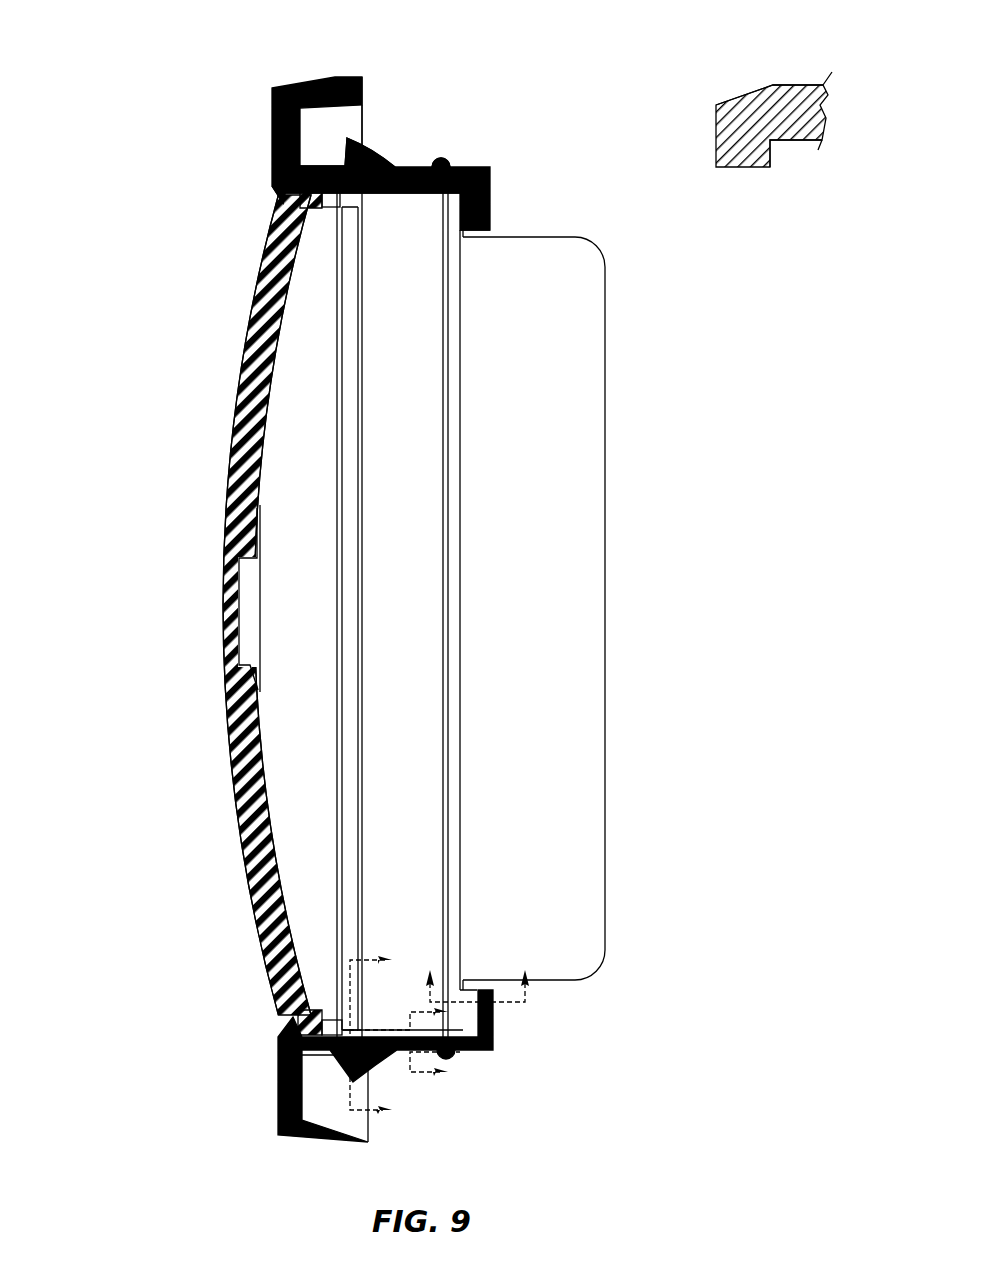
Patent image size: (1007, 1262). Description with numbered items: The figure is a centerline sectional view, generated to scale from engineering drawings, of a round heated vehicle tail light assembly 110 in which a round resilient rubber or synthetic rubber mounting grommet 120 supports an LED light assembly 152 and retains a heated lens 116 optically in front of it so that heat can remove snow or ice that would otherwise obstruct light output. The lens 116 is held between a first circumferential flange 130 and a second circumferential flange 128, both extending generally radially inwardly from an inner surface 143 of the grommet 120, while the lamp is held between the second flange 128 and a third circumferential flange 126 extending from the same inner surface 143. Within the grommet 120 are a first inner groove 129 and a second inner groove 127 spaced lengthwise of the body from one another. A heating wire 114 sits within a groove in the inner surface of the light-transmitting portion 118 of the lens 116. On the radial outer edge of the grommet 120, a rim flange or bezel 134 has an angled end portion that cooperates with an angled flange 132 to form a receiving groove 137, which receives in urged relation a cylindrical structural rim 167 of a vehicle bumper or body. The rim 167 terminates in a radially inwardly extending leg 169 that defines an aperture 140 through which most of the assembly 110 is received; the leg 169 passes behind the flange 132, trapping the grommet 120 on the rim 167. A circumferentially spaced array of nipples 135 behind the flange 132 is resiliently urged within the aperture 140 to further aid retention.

The round heated vehicle tail light assembly 110 is at (165, 124).
The heating wire 114 is at (245, 601).
The heated lens 116 is at (227, 853).
The light-transmitting portion 118 is at (272, 795).
The mounting grommet 120 is at (347, 123).
The third circumferential flange 126 is at (447, 212).
The second inner groove 127 is at (413, 926).
The second circumferential flange 128 is at (328, 203).
The first inner groove 129 is at (322, 1006).
The first circumferential flange 130 is at (282, 188).
The angled flange 132 is at (392, 158).
The rim flange 134 is at (356, 76).
The nipples 135 is at (447, 163).
The receiving groove 137 is at (394, 109).
The aperture 140 is at (743, 113).
The inner surface 143 is at (397, 196).
The LED light assembly 152 is at (568, 235).
The cylindrical structural rim 167 is at (786, 84).
The leg 169 is at (773, 150).